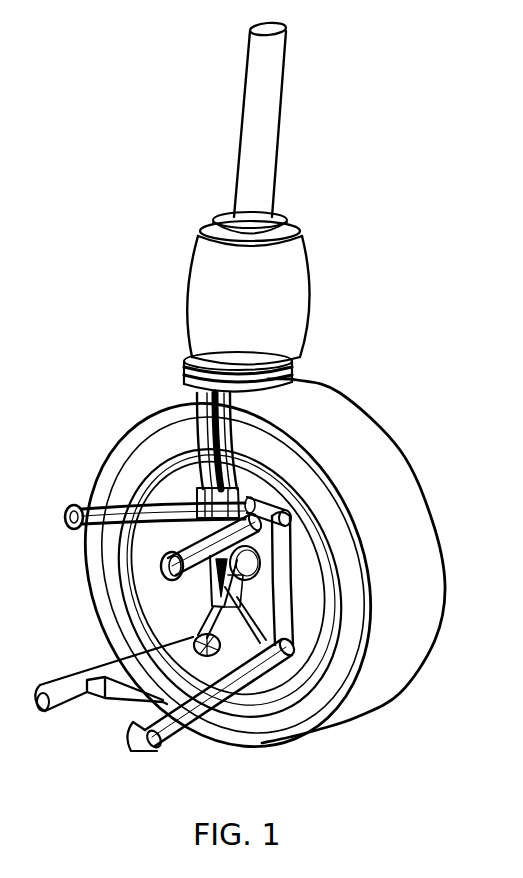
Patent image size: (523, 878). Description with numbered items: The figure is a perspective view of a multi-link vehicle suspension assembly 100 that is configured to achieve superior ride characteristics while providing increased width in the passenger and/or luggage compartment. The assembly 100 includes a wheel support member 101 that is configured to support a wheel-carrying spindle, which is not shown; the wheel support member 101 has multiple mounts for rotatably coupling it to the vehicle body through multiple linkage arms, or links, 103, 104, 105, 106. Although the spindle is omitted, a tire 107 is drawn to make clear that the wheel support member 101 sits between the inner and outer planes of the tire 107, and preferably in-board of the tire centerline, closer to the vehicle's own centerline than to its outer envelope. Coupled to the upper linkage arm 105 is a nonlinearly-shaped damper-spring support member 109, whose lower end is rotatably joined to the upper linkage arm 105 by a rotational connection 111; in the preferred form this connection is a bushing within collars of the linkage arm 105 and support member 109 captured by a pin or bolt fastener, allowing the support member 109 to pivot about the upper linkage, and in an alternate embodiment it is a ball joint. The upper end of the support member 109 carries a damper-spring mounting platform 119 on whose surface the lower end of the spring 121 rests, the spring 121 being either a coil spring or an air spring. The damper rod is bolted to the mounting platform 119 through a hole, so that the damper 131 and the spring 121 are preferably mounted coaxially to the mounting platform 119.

The multi-link vehicle suspension assembly 100 is at (398, 212).
The wheel support member 101 is at (262, 594).
The linkage arm 103 is at (270, 663).
The linkage arm 104 is at (205, 621).
The upper linkage arm 105 is at (162, 580).
The linkage arm 106 is at (143, 503).
The tire 107 is at (310, 403).
The damper-spring support member 109 is at (172, 435).
The rotational connection 111 is at (252, 516).
The damper-spring mounting platform 119 is at (200, 373).
The spring 121 is at (262, 307).
The damper 131 is at (253, 117).